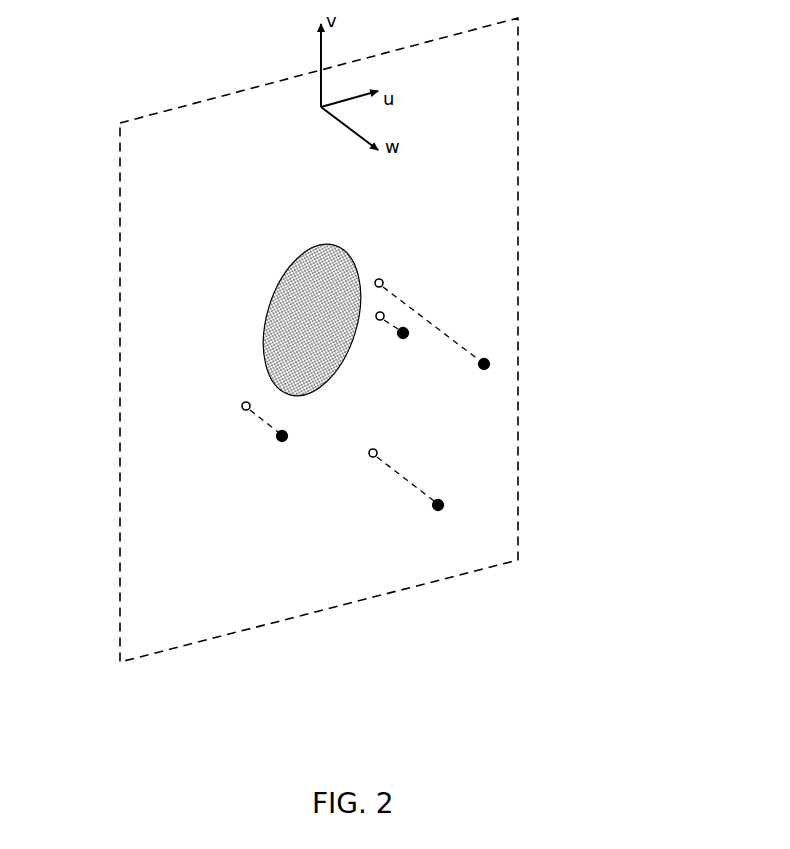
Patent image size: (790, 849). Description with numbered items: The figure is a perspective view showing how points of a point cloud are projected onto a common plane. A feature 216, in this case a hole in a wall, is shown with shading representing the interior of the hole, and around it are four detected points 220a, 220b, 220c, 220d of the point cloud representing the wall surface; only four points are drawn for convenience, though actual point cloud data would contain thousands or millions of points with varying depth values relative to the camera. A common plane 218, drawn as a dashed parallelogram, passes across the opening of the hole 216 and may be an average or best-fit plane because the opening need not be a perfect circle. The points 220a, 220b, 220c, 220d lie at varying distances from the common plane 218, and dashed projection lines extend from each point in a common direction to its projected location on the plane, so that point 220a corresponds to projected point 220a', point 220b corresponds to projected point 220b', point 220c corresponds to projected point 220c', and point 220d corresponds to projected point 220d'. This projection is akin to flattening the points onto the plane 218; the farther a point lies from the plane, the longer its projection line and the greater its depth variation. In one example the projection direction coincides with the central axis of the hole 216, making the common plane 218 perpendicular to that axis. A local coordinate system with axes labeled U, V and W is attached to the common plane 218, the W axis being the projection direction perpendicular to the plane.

The feature 216 is at (275, 292).
The common plane 218 is at (503, 125).
The point 220a is at (165, 468).
The projected point 220a' is at (146, 410).
The point 220b is at (462, 599).
The projected point 220b' is at (364, 571).
The point 220c is at (511, 375).
The projected point 220c' is at (501, 393).
The point 220d is at (554, 309).
The projected point 220d' is at (507, 239).